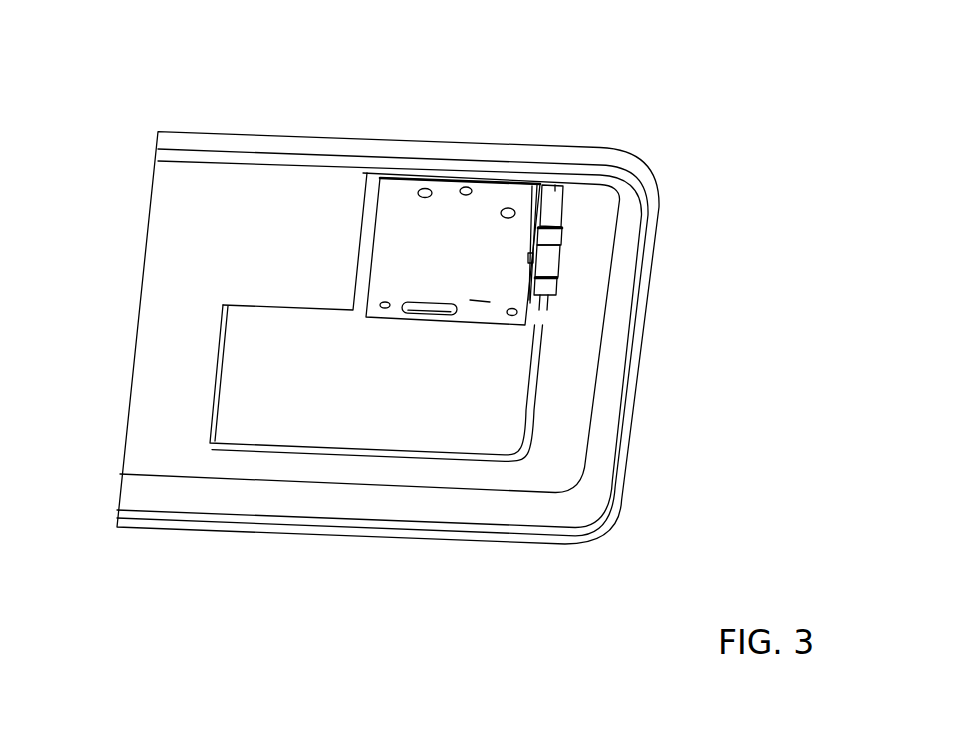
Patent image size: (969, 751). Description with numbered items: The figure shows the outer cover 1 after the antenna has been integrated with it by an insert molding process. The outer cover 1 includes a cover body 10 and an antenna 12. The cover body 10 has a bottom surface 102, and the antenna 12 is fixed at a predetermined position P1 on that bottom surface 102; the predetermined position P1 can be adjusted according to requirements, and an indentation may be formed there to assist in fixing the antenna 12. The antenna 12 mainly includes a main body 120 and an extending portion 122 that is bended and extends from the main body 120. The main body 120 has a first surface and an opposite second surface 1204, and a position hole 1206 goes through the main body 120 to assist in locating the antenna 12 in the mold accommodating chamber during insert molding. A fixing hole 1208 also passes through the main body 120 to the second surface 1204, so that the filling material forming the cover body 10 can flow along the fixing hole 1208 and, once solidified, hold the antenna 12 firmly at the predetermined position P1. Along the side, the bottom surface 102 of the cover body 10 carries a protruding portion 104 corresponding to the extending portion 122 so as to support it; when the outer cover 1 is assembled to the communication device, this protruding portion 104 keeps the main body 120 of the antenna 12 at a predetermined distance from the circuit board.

The outer cover 1 is at (133, 102).
The cover body 10 is at (161, 132).
The bottom surface 102 is at (276, 222).
The protruding portion 104 is at (552, 208).
The antenna 12 is at (748, 295).
The main body 120 is at (547, 308).
The extending portion 122 is at (563, 237).
The second surface 1204 is at (477, 303).
The position hole 1206 is at (423, 190).
The fixing hole 1208 is at (415, 312).
The predetermined position P1 is at (527, 337).